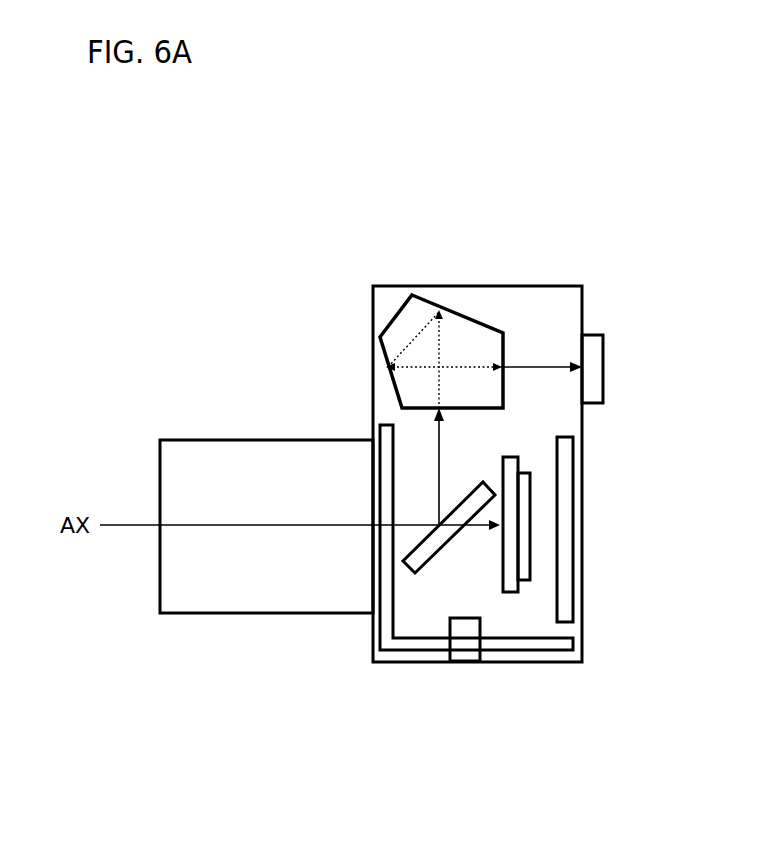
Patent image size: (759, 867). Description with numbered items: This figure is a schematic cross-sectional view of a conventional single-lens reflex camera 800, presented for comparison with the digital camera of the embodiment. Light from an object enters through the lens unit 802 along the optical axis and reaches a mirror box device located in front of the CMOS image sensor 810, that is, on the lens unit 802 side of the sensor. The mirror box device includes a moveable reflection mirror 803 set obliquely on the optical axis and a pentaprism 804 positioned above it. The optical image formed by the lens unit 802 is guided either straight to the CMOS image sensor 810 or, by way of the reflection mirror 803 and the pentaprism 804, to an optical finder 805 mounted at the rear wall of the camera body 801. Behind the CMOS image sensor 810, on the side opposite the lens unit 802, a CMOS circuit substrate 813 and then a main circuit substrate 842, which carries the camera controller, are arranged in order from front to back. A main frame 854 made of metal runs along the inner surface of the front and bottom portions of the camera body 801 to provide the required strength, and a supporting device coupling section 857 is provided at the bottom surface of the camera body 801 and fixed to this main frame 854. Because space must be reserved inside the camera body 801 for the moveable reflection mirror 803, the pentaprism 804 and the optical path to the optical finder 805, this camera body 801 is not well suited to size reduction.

The single-lens reflex camera 800 is at (330, 264).
The camera body 801 is at (456, 275).
The lens unit 802 is at (255, 626).
The reflection mirror 803 is at (422, 557).
The pentaprism 804 is at (402, 326).
The optical finder 805 is at (593, 352).
The CMOS image sensor 810 is at (512, 470).
The CMOS circuit substrate 813 is at (523, 553).
The main circuit substrate 842 is at (565, 612).
The main frame 854 is at (385, 437).
The supporting device coupling section 857 is at (470, 653).